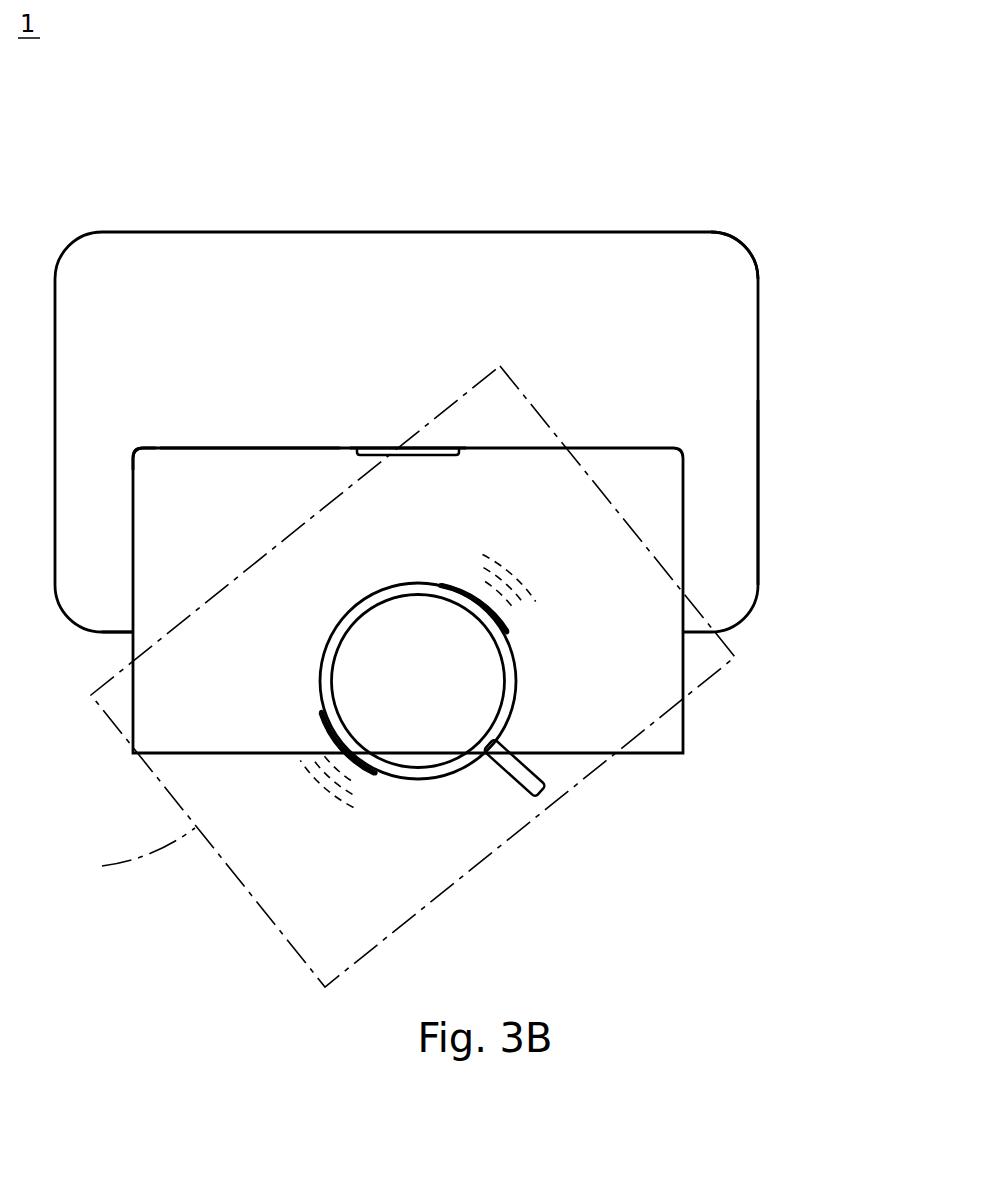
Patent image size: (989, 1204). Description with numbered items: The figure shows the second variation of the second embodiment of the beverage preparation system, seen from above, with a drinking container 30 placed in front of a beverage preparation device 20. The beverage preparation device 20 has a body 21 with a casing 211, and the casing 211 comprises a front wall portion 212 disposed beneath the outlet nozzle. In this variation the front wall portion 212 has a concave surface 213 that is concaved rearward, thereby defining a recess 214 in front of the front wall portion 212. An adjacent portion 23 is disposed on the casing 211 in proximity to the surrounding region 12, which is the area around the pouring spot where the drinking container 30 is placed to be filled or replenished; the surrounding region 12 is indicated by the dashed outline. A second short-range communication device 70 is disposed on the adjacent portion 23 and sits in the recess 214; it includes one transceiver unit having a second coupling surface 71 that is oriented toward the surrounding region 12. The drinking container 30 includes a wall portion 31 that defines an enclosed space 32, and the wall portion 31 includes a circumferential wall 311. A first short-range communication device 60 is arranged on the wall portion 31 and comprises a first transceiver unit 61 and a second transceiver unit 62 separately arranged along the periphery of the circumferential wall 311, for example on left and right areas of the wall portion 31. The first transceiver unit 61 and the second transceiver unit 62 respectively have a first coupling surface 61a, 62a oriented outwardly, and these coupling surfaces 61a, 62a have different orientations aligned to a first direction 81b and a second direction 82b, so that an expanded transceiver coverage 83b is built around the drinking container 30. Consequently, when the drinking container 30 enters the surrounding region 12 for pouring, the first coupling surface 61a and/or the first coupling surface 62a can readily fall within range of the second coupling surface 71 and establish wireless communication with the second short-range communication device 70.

The beverage preparation device 20 is at (768, 253).
The body 21 is at (745, 372).
The casing 211 is at (760, 487).
The front wall portion 212 is at (107, 640).
The concave surface 213 is at (131, 449).
The recess 214 is at (192, 456).
The adjacent portion 23 is at (344, 461).
The second short-range communication device 70 is at (392, 448).
The second coupling surface 71 is at (430, 457).
The surrounding region 12 is at (658, 729).
The drinking container 30 is at (369, 688).
The wall portion 31 is at (376, 679).
The circumferential wall 311 is at (348, 608).
The enclosed space 32 is at (398, 680).
The first short-range communication device 60 is at (474, 738).
The first transceiver unit 61 is at (450, 790).
The first coupling surface 61a is at (366, 782).
The second transceiver unit 62 is at (533, 707).
The first coupling surface 62a is at (514, 623).
The first direction 81b is at (516, 563).
The second direction 82b is at (305, 788).
The expanded transceiver coverage 83b is at (122, 852).